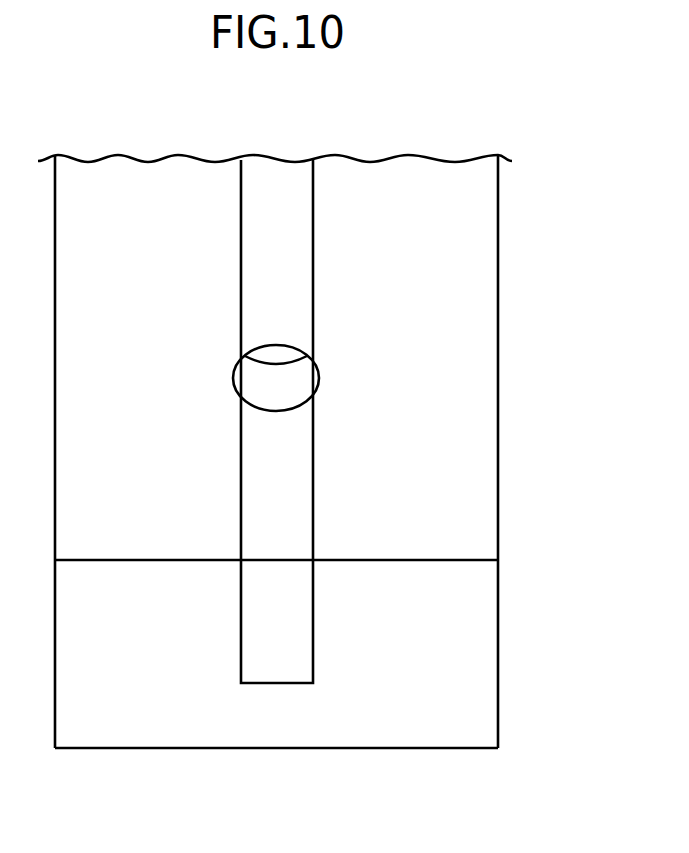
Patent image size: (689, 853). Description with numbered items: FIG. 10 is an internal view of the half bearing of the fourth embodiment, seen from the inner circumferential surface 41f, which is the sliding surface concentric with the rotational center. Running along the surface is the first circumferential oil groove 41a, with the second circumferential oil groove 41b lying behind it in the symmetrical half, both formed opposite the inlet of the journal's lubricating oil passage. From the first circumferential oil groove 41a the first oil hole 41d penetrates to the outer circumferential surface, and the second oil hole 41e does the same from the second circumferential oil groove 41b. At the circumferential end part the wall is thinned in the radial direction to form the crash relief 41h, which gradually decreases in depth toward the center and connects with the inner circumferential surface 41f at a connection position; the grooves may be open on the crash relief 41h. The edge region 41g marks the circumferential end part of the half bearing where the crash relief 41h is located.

The first circumferential oil groove 41a is at (323, 389).
The second circumferential oil groove 41b is at (277, 187).
The first oil hole 41d is at (335, 419).
The second oil hole 41e is at (278, 373).
The inner circumferential surface 41f is at (170, 353).
The bottom edge 41g is at (443, 748).
The crash relief 41h is at (174, 658).